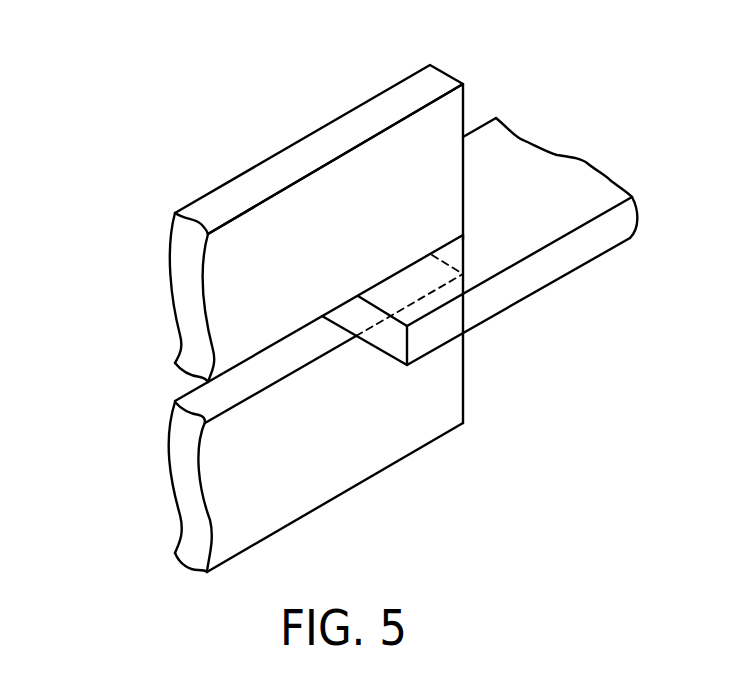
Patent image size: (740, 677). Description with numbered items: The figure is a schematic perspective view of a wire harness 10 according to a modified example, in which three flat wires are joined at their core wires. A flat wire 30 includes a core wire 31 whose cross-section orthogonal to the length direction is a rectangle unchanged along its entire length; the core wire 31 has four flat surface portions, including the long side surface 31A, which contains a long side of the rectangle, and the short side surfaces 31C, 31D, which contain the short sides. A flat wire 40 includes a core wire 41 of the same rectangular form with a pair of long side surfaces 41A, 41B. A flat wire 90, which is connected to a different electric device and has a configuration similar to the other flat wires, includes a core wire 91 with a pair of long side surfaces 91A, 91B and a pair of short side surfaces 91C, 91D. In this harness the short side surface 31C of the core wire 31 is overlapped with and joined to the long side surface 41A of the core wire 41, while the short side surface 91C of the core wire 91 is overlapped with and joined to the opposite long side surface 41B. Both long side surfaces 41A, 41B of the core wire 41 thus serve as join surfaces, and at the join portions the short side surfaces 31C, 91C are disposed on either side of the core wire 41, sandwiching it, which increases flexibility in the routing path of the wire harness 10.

The wire harness 10 is at (347, 294).
The flat wire 30 is at (344, 233).
The core wire 31 is at (344, 233).
The long side surface 31A is at (448, 190).
The short side surface 31C is at (246, 358).
The short side surface 31D is at (337, 133).
The flat wire 40 is at (479, 213).
The core wire 41 is at (479, 213).
The long side surface 41A is at (582, 178).
The long side surface 41B is at (560, 282).
The flat wire 90 is at (267, 413).
The core wire 91 is at (267, 413).
The long side surface 91A is at (385, 448).
The long side surface 91B is at (177, 483).
The short side surface 91C is at (290, 347).
The short side surface 91D is at (348, 502).